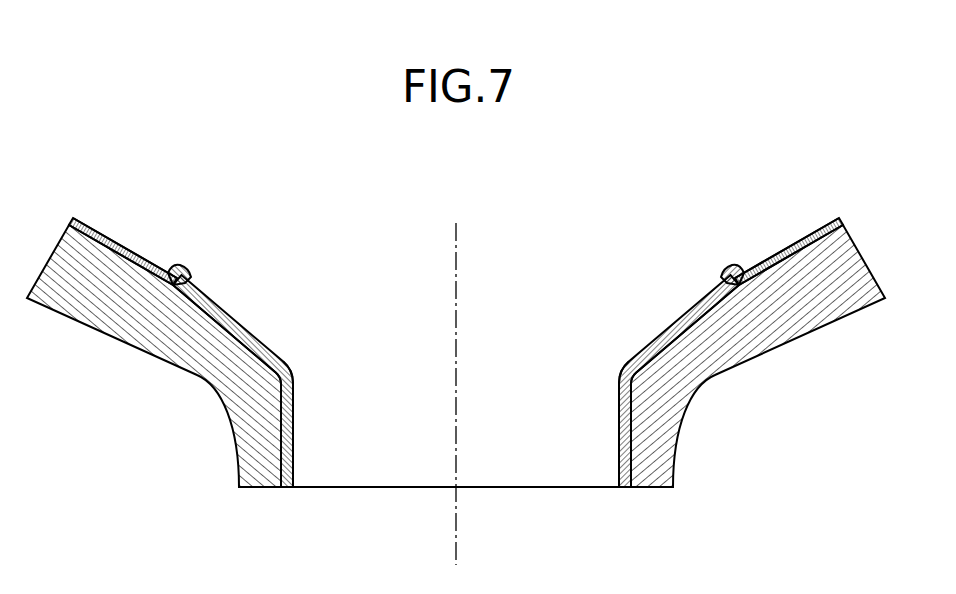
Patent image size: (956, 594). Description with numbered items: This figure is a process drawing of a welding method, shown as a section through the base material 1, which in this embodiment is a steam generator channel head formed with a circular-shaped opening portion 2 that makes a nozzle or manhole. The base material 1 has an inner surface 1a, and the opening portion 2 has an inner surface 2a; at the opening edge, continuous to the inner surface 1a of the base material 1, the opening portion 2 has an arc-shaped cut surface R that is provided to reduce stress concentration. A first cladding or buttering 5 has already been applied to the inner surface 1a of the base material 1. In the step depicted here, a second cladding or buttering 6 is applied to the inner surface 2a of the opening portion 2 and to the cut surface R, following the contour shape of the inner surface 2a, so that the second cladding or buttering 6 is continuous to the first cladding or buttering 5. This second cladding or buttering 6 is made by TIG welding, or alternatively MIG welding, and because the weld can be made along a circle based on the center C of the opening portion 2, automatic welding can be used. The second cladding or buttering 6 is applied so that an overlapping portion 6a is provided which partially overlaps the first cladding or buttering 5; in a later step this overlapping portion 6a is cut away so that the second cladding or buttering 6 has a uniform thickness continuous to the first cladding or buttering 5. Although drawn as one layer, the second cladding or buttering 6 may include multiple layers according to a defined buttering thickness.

The base material 1 is at (775, 340).
The inner surface of the base material 1a is at (152, 266).
The first cladding or buttering 5 is at (160, 270).
The second cladding or buttering 6 is at (294, 402).
The overlapping portion 6a is at (180, 267).
The opening portion 2 is at (618, 476).
The inner surface of the opening portion 2a is at (294, 476).
The cut surface R is at (269, 348).
The center of the opening portion C is at (454, 380).